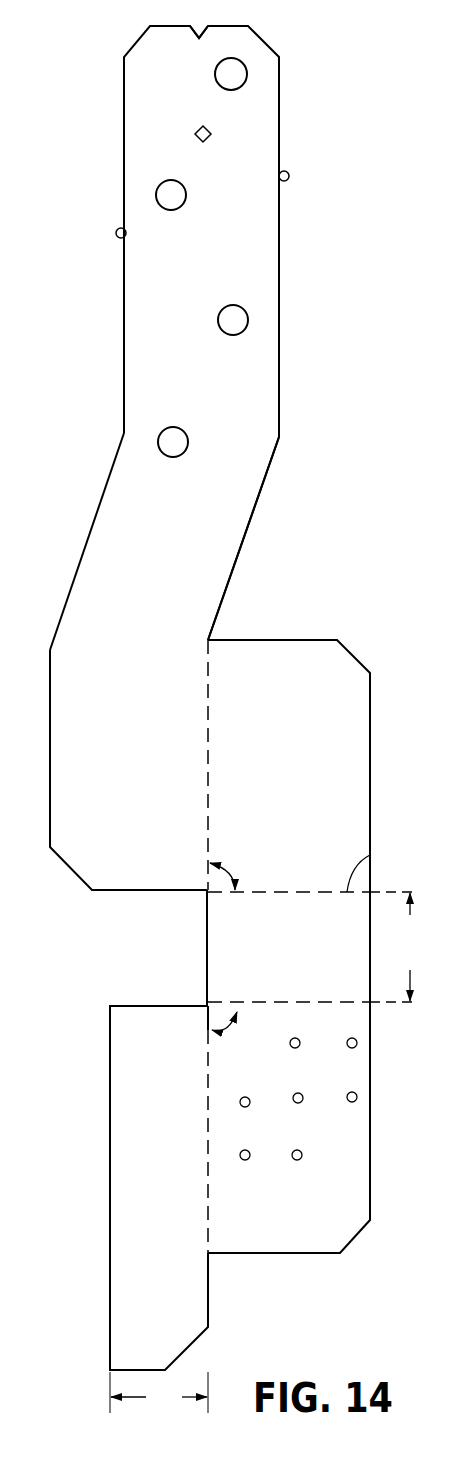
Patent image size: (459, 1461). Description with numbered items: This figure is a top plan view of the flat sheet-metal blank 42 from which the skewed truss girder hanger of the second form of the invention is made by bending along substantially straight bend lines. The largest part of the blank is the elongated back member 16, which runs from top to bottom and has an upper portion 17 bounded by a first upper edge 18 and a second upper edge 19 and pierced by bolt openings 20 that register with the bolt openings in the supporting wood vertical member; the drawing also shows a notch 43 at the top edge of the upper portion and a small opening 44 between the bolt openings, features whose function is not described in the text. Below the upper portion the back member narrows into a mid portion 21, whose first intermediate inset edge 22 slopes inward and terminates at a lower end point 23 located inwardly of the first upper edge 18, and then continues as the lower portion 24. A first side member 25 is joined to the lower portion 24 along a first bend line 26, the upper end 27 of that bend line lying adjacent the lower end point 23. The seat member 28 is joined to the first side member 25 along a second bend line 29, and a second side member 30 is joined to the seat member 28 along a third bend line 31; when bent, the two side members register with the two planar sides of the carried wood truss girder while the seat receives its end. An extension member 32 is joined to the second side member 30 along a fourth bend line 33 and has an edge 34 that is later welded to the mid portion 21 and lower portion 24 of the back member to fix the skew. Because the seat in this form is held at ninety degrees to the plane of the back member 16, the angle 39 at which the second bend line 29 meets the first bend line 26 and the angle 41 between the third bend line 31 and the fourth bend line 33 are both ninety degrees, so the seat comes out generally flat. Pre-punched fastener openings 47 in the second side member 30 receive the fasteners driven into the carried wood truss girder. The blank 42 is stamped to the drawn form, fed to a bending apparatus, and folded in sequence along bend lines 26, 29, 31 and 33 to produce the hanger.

The elongated back member 16 is at (124, 67).
The upper portion 17 is at (170, 97).
The first upper edge 18 is at (281, 180).
The second upper edge 19 is at (125, 237).
The bolt openings 20 is at (222, 80).
The mid portion 21 is at (135, 645).
The first intermediate inset edge 22 is at (257, 512).
The lower end point 23 is at (212, 638).
The lower portion 24 is at (135, 835).
The first side member 25 is at (326, 760).
The first bend line 26 is at (208, 717).
The upper end 27 is at (210, 650).
The seat member 28 is at (300, 970).
The second bend line 29 is at (370, 855).
The second side member 30 is at (311, 1218).
The third bend line 31 is at (257, 1000).
The extension member 32 is at (160, 1202).
The fourth bend line 33 is at (212, 1210).
The edge 34 is at (110, 1095).
The angle 39 is at (232, 868).
The angle 41 is at (230, 1038).
The blank 42 is at (324, 251).
The notch 43 is at (199, 33).
The diamond hole 44 is at (211, 128).
The fastener openings 47 is at (352, 1048).